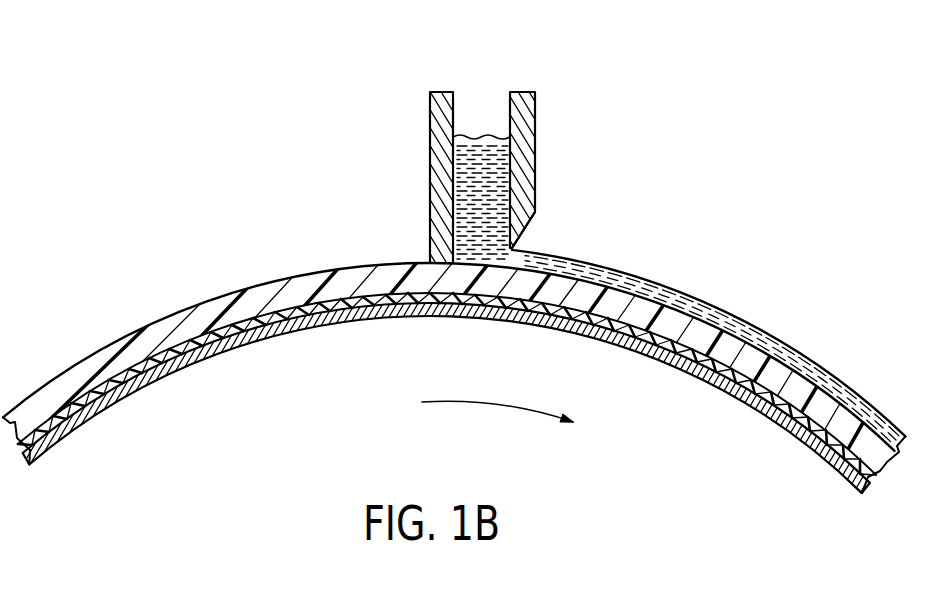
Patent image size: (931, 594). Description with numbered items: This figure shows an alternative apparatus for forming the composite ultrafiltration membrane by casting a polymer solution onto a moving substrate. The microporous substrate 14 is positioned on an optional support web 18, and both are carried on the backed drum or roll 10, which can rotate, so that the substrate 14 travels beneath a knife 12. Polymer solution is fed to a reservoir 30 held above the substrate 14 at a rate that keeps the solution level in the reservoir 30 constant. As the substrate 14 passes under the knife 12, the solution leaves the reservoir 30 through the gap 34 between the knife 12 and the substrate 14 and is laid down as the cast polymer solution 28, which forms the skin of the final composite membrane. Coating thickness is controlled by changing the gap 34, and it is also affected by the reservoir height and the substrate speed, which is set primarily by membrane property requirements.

The rotating drum 10 is at (463, 455).
The knife 12 is at (535, 130).
The microporous substrate 14 is at (152, 330).
The support web 18 is at (123, 375).
The cast polymer solution 28 is at (777, 338).
The reservoir 30 is at (487, 133).
The gap 34 is at (518, 245).